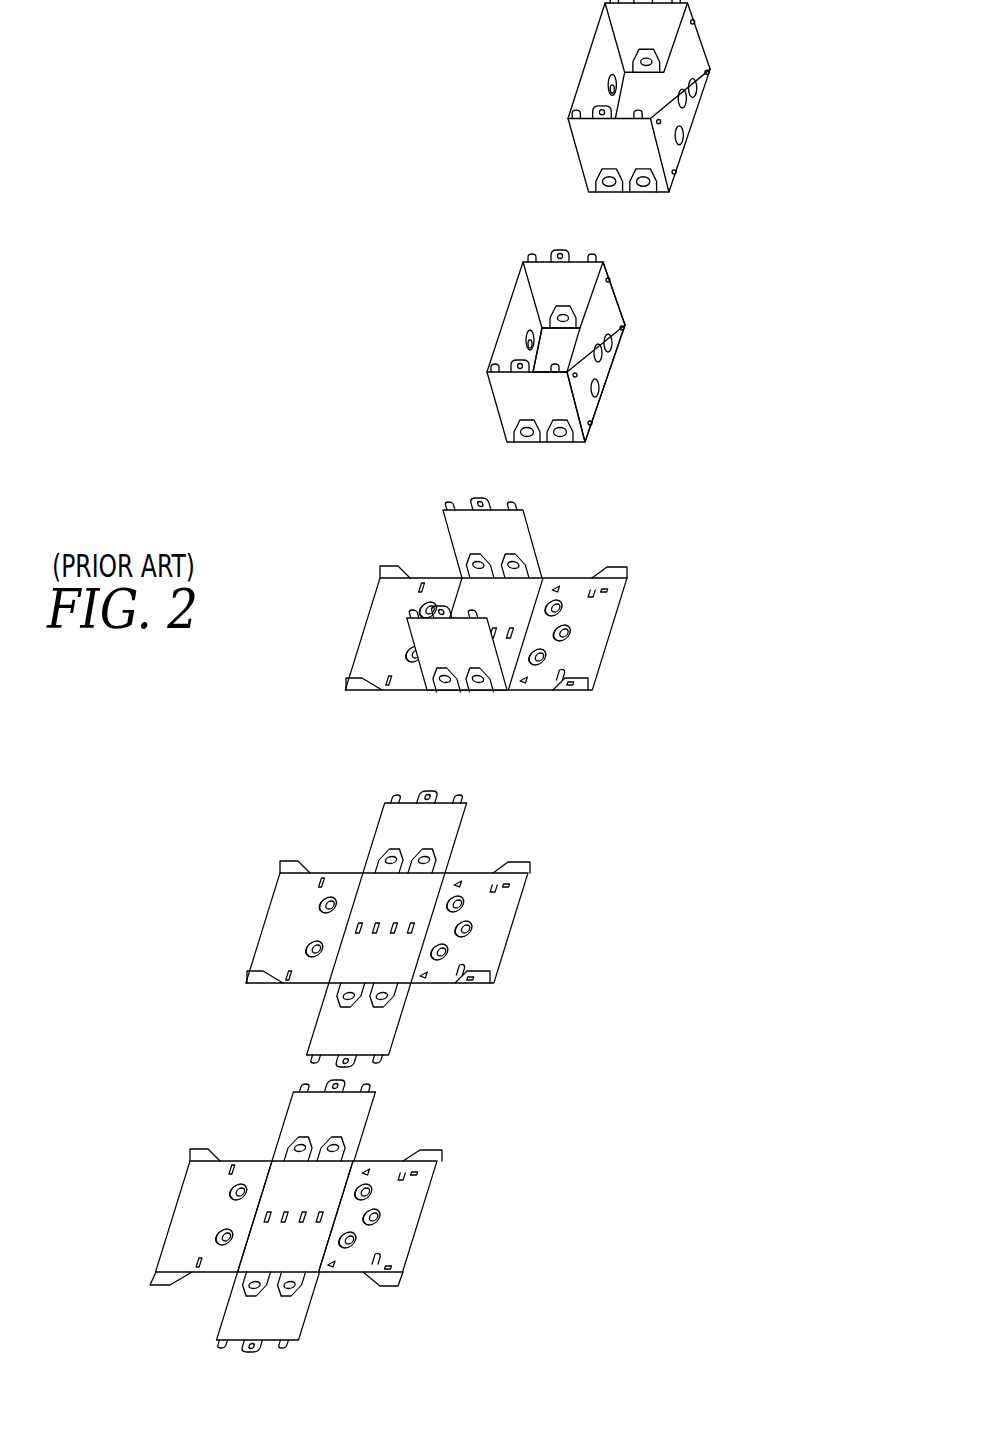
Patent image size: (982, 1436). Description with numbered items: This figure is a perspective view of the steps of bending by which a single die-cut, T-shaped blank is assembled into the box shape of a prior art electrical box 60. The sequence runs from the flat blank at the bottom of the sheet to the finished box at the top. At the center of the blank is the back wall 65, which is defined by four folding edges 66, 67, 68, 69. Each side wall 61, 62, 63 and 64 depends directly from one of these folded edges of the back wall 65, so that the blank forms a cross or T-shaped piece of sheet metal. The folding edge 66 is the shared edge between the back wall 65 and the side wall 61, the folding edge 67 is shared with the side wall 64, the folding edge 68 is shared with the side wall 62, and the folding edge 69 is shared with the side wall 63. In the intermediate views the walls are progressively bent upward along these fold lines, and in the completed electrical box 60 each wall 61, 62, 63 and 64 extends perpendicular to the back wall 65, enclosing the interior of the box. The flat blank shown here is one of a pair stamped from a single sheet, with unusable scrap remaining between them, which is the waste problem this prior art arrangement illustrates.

The prior art electrical box 60 is at (712, 120).
The side wall 61 is at (383, 1237).
The side wall 62 is at (200, 1220).
The side wall 63 is at (300, 1113).
The side wall 64 is at (240, 1323).
The back wall 65 is at (285, 1197).
The folding edge 66 is at (613, 367).
The folding edge 67 is at (500, 692).
The folding edge 68 is at (542, 326).
The folding edge 69 is at (537, 565).